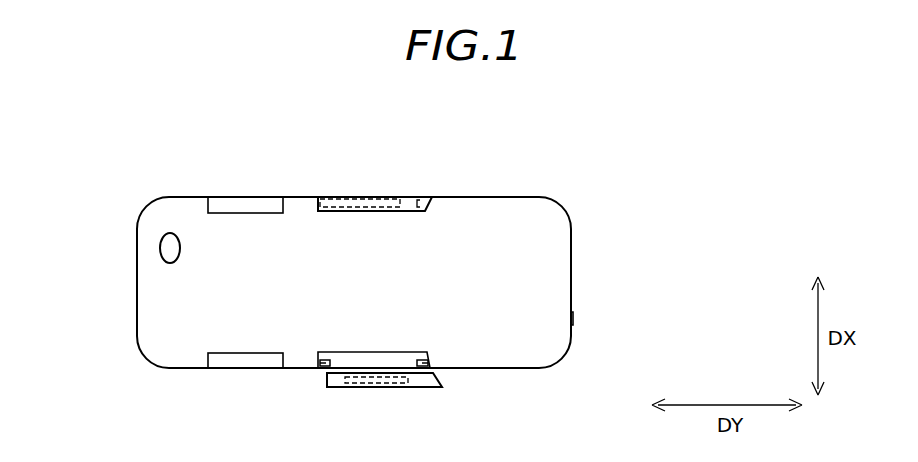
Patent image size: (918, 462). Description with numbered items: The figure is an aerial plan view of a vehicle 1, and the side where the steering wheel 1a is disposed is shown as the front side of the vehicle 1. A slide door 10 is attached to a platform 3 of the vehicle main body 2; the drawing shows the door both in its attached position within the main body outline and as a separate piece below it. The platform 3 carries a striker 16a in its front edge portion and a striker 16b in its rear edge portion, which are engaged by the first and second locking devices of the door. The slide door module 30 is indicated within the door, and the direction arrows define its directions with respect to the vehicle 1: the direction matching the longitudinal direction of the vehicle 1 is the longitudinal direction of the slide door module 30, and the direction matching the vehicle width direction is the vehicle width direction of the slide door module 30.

The vehicle 1 is at (626, 185).
The steering wheel 1a is at (160, 248).
The vehicle main body 2 is at (504, 197).
The platform 3 is at (380, 352).
The slide door 10 is at (414, 199).
The striker 16a is at (333, 356).
The striker 16b is at (418, 357).
The slide door module 30 is at (368, 196).